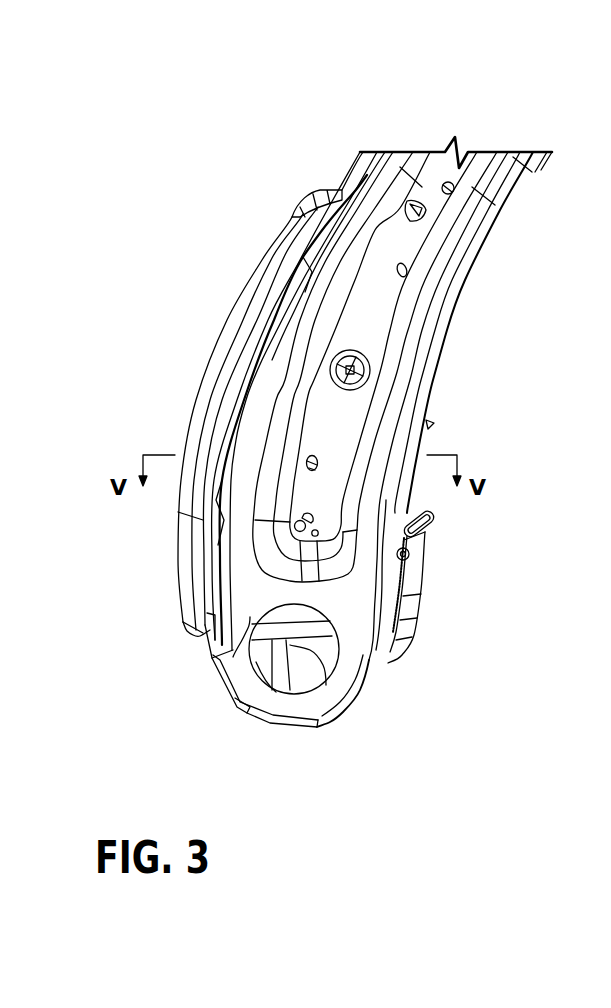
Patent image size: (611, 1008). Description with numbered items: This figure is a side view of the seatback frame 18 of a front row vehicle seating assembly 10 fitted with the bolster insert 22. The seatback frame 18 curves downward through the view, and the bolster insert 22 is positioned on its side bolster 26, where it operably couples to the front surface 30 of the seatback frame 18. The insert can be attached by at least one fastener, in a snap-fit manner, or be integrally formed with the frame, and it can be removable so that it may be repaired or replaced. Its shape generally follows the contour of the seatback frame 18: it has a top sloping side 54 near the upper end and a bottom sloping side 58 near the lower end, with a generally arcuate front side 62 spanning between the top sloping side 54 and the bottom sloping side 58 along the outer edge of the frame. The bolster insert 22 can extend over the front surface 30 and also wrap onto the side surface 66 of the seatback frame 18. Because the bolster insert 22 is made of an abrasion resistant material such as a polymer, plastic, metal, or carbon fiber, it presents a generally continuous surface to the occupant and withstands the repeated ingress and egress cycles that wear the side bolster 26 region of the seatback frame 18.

The vehicle seating assembly 10 is at (163, 263).
The seatback frame 18 is at (364, 650).
The bolster insert 22 is at (168, 490).
The side bolster 26 is at (263, 400).
The front surface 30 is at (348, 182).
The top sloping side 54 is at (340, 190).
The bottom sloping side 58 is at (195, 640).
The front side 62 is at (205, 384).
The side surface 66 is at (222, 673).